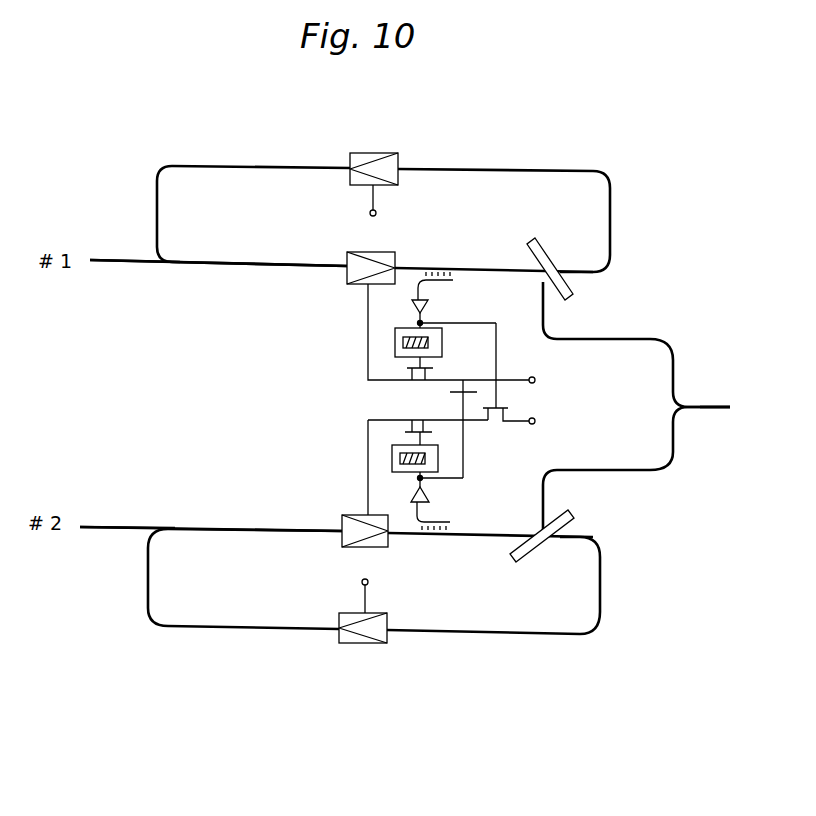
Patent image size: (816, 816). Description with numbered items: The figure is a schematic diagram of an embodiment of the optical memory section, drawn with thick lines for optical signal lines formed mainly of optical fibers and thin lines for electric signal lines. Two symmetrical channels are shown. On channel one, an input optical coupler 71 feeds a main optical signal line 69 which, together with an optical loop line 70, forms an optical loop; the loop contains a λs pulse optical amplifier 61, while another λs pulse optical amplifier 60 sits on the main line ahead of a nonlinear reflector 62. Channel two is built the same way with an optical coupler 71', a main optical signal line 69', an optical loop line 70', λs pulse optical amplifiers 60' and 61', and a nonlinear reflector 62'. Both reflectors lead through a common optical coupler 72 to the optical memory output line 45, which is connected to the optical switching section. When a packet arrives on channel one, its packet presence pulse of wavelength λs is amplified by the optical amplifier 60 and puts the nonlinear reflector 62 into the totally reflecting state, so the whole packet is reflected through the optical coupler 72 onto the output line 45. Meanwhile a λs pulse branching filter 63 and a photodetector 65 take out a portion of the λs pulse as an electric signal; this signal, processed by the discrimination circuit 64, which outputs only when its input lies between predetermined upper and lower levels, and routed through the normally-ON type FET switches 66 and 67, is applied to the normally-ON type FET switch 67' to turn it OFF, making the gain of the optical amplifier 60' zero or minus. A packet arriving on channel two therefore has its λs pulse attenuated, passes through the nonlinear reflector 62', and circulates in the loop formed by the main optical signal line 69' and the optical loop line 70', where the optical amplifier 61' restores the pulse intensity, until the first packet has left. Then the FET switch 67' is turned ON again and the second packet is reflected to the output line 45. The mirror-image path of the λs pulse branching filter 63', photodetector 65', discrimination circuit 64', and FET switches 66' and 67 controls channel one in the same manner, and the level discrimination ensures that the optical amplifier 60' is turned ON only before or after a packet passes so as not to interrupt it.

The optical memory output line 45 is at (718, 412).
The λs pulse optical amplifier 60 is at (353, 245).
The λs pulse optical amplifier 60' is at (348, 550).
The λs pulse optical amplifier 61 is at (374, 161).
The λs pulse optical amplifier 61' is at (363, 635).
The nonlinear reflector 62 is at (550, 258).
The nonlinear reflector 62' is at (542, 554).
The λs pulse branching filter 63 is at (435, 262).
The λs pulse branching filter 63' is at (433, 543).
The discrimination circuit 64 is at (436, 348).
The discrimination circuit 64' is at (404, 476).
The photodetector 65 is at (454, 312).
The photodetector 65' is at (449, 488).
The normally-ON type FET switch 66 is at (424, 392).
The normally-ON type FET switch 66' is at (425, 421).
The normally-ON type FET switch 67 is at (467, 414).
The normally-ON type FET switch 67' is at (509, 394).
The main optical signal line 69 is at (253, 239).
The main optical signal line 69' is at (245, 552).
The optical loop line 70 is at (504, 197).
The optical loop line 70' is at (493, 610).
The optical coupler 71 is at (135, 286).
The optical coupler 71' is at (129, 502).
The optical coupler 72 is at (680, 414).